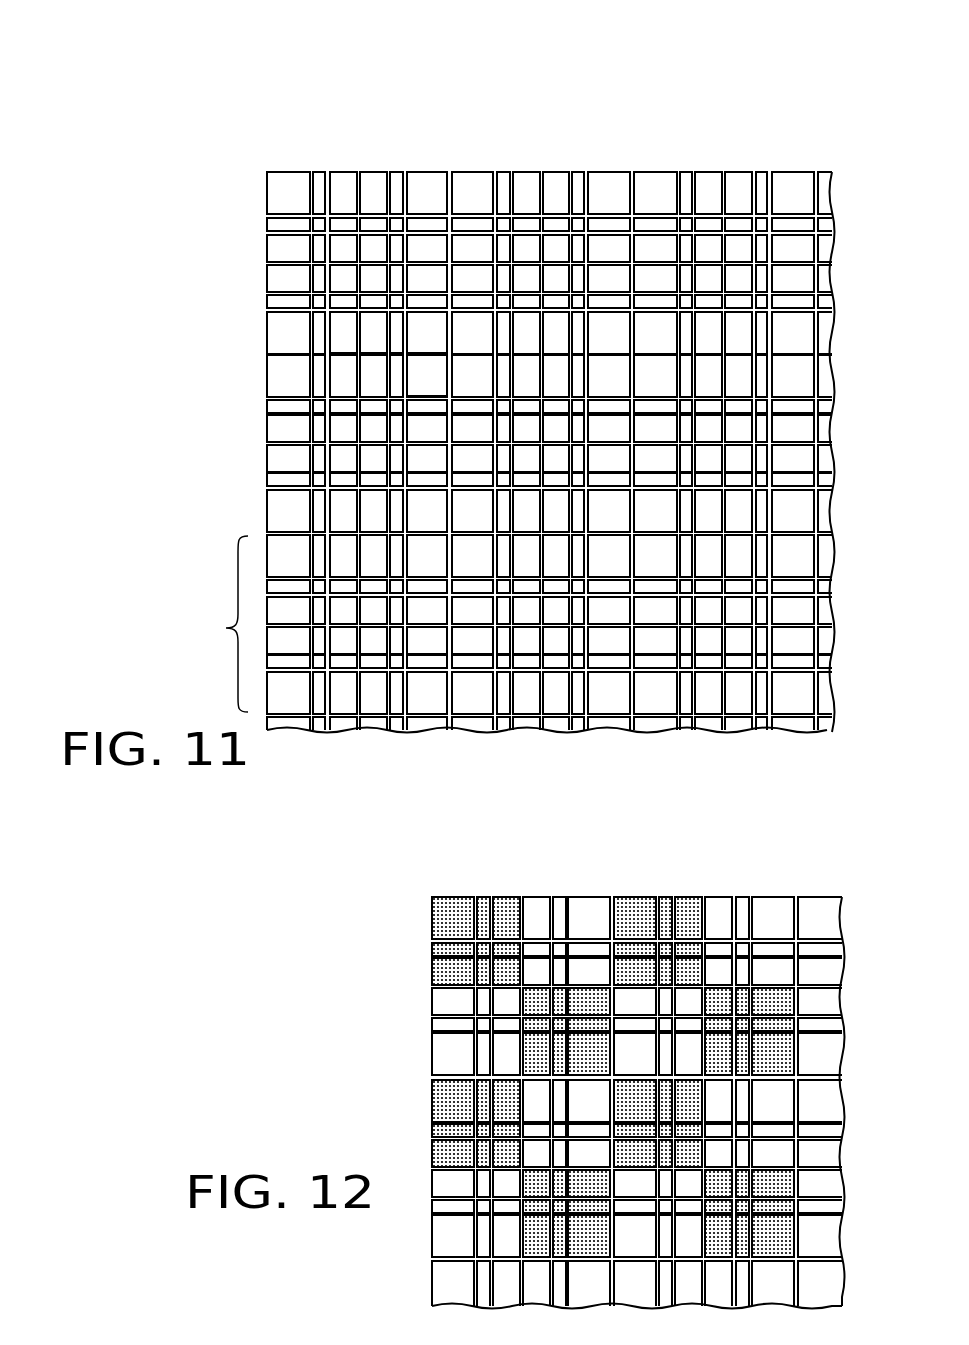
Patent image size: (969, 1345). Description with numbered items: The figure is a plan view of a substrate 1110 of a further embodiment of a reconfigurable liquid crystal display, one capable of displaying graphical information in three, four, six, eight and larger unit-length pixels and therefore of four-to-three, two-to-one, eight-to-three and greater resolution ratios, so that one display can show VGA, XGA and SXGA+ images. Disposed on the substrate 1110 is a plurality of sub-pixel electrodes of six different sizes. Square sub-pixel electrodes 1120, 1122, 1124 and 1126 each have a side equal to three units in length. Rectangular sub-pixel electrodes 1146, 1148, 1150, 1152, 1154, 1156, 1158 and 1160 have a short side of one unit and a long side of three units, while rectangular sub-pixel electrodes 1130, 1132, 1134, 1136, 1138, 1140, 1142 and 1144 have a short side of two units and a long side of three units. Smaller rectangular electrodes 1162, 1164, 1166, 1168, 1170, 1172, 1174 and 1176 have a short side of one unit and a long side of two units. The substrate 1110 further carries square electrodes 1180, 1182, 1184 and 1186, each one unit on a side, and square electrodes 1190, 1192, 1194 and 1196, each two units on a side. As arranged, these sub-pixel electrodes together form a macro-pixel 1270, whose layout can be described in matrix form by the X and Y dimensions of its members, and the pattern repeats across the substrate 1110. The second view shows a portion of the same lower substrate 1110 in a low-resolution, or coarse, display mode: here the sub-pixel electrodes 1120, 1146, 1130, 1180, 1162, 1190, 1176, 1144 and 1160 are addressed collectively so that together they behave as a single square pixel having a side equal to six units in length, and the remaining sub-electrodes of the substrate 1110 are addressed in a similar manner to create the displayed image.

In FIG. 11, the substrate 1110 is at (834, 154).
In FIG. 12, the substrate 1110 is at (753, 886).
In FIG. 11, the square sub-pixel electrode 1120 is at (280, 186).
In FIG. 12, the square sub-pixel electrode 1120 is at (447, 908).
In FIG. 11, the square sub-pixel electrode 1122 is at (438, 205).
In FIG. 11, the square sub-pixel electrode 1124 is at (430, 322).
In FIG. 11, the square sub-pixel electrode 1126 is at (366, 268).
In FIG. 11, the rectangular sub-pixel electrode 1130 is at (352, 182).
In FIG. 12, the rectangular sub-pixel electrode 1130 is at (505, 905).
In FIG. 11, the rectangular sub-pixel electrode 1132 is at (371, 230).
In FIG. 11, the rectangular sub-pixel electrode 1134 is at (437, 243).
In FIG. 11, the rectangular sub-pixel electrode 1136 is at (435, 275).
In FIG. 11, the rectangular sub-pixel electrode 1138 is at (395, 340).
In FIG. 11, the rectangular sub-pixel electrode 1140 is at (412, 355).
In FIG. 11, the rectangular sub-pixel electrode 1142 is at (287, 273).
In FIG. 11, the rectangular sub-pixel electrode 1144 is at (287, 254).
In FIG. 12, the rectangular sub-pixel electrode 1144 is at (445, 975).
In FIG. 11, the rectangular sub-pixel electrode 1146 is at (320, 196).
In FIG. 12, the rectangular sub-pixel electrode 1146 is at (483, 905).
In FIG. 11, the rectangular sub-pixel electrode 1148 is at (398, 230).
In FIG. 11, the rectangular sub-pixel electrode 1150 is at (433, 225).
In FIG. 11, the rectangular sub-pixel electrode 1152 is at (433, 298).
In FIG. 11, the rectangular sub-pixel electrode 1154 is at (350, 290).
In FIG. 11, the rectangular sub-pixel electrode 1156 is at (350, 338).
In FIG. 11, the rectangular sub-pixel electrode 1158 is at (300, 296).
In FIG. 11, the rectangular sub-pixel electrode 1160 is at (280, 222).
In FIG. 12, the rectangular sub-pixel electrode 1160 is at (442, 950).
In FIG. 11, the rectangular electrode 1162 is at (340, 250).
In FIG. 12, the rectangular electrode 1162 is at (526, 973).
In FIG. 11, the rectangular electrode 1164 is at (395, 207).
In FIG. 11, the rectangular electrode 1166 is at (400, 325).
In FIG. 11, the rectangular electrode 1168 is at (385, 315).
In FIG. 11, the rectangular electrode 1170 is at (380, 338).
In FIG. 11, the rectangular electrode 1172 is at (398, 338).
In FIG. 11, the rectangular electrode 1174 is at (320, 278).
In FIG. 11, the rectangular electrode 1176 is at (320, 246).
In FIG. 12, the rectangular electrode 1176 is at (488, 975).
In FIG. 11, the square electrode 1180 is at (338, 222).
In FIG. 12, the square electrode 1180 is at (487, 948).
In FIG. 11, the square electrode 1182 is at (410, 252).
In FIG. 11, the square electrode 1184 is at (378, 305).
In FIG. 11, the square electrode 1186 is at (324, 300).
In FIG. 11, the square electrode 1190 is at (378, 190).
In FIG. 12, the square electrode 1190 is at (516, 948).
In FIG. 11, the square electrode 1192 is at (398, 335).
In FIG. 11, the square electrode 1194 is at (366, 300).
In FIG. 11, the square electrode 1196 is at (378, 330).
In FIG. 11, the macro-pixel 1270 is at (226, 628).